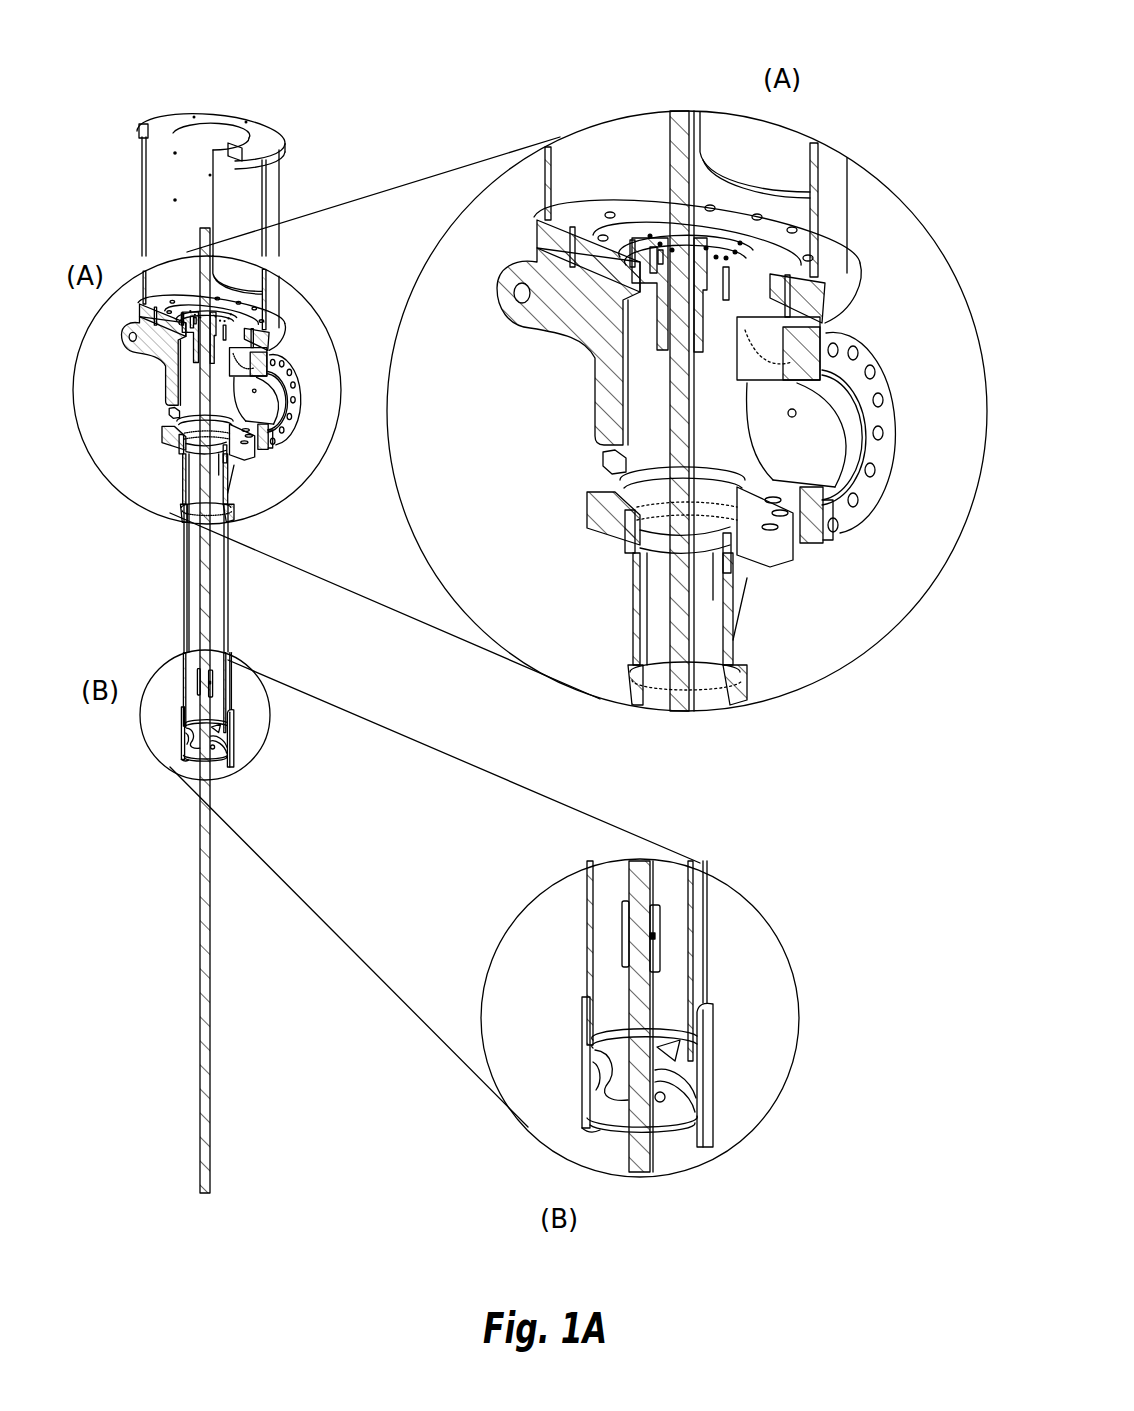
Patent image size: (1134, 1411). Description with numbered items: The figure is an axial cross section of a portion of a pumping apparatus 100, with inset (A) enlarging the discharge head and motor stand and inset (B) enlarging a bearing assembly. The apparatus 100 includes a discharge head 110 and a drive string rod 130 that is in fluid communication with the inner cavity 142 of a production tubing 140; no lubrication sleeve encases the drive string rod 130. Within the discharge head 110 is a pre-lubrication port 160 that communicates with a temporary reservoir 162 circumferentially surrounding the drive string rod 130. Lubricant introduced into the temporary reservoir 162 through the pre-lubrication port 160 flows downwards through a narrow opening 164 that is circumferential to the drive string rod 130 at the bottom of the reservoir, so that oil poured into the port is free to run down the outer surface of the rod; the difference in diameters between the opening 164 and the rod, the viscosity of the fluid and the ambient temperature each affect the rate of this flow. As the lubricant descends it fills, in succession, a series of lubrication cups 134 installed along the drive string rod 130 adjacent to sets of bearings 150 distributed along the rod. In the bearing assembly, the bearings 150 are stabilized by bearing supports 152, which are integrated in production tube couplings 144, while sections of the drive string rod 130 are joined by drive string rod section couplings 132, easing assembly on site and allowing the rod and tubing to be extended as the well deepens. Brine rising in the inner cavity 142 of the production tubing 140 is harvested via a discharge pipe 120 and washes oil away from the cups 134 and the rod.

The pumping apparatus 100 is at (143, 85).
The discharge head 110 is at (847, 178).
The discharge pipe 120 is at (813, 470).
The drive string rod 130 is at (630, 863).
The drive string rod section couplings 132 is at (642, 937).
The lubrication cups 134 is at (658, 1052).
The production tubing 140 is at (637, 638).
The inner cavity 142 is at (653, 593).
The production tube couplings 144 is at (713, 1095).
The bearings 150 is at (653, 1097).
The bearing supports 152 is at (600, 1068).
The pre-lubrication port 160 is at (650, 240).
The temporary reservoir 162 is at (663, 253).
The narrow opening 164 is at (668, 323).